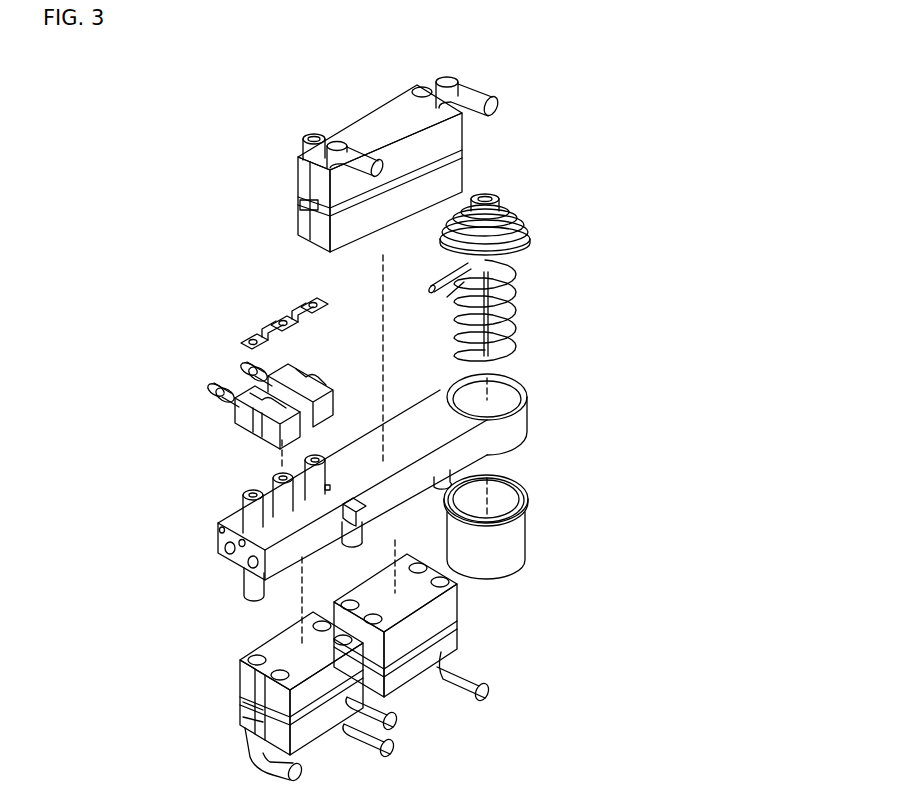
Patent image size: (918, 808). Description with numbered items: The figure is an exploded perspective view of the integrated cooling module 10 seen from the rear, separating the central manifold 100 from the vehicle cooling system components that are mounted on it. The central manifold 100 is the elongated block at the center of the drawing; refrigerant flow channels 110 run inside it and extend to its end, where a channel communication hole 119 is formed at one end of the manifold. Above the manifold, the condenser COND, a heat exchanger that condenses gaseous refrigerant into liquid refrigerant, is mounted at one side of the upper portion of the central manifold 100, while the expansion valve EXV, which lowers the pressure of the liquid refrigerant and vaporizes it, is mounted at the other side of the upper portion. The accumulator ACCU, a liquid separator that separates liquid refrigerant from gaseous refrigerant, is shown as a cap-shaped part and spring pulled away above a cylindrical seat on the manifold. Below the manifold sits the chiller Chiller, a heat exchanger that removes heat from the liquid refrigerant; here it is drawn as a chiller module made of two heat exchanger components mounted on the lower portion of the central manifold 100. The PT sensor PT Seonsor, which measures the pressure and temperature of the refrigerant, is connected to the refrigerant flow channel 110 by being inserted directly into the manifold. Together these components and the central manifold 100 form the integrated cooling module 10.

The integrated cooling module 10 is at (117, 133).
The central manifold 100 is at (527, 533).
The refrigerant flow channel 110 is at (218, 527).
The channel communication hole 119 is at (220, 545).
The condenser COND is at (297, 175).
The expansion valve EXV is at (240, 340).
The accumulator ACCU is at (530, 240).
The PT sensor PT Seonsor is at (424, 443).
The chiller Chiller is at (392, 741).